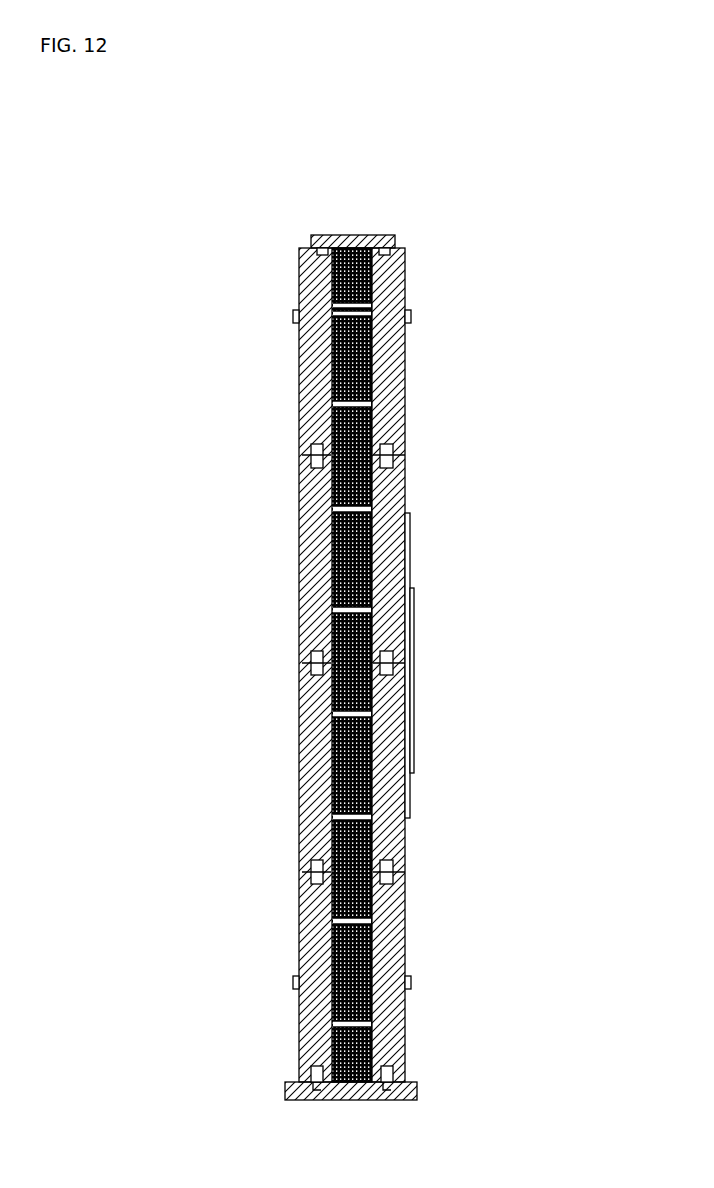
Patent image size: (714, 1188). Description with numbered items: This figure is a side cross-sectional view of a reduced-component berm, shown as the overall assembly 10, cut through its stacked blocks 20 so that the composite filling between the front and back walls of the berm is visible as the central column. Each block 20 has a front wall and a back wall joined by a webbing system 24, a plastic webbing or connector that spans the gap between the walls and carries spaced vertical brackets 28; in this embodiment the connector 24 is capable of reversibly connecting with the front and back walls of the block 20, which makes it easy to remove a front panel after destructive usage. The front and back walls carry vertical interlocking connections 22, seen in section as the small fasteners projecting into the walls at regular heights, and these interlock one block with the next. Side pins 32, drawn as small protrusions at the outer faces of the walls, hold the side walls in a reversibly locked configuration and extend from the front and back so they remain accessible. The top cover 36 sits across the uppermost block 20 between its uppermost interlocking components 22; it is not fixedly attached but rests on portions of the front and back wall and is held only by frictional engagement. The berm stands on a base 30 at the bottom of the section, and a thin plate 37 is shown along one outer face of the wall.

The heat exchanger assembly 10 is at (547, 132).
The straight block 20 is at (307, 606).
The vertical interlocking connections 22 is at (389, 452).
The webbing system 24 is at (374, 332).
The vertical brackets 28 is at (372, 300).
The base plate 30 is at (284, 1094).
The side pins 32 is at (293, 317).
The top cover 36 is at (345, 235).
The side plate 37 is at (412, 562).